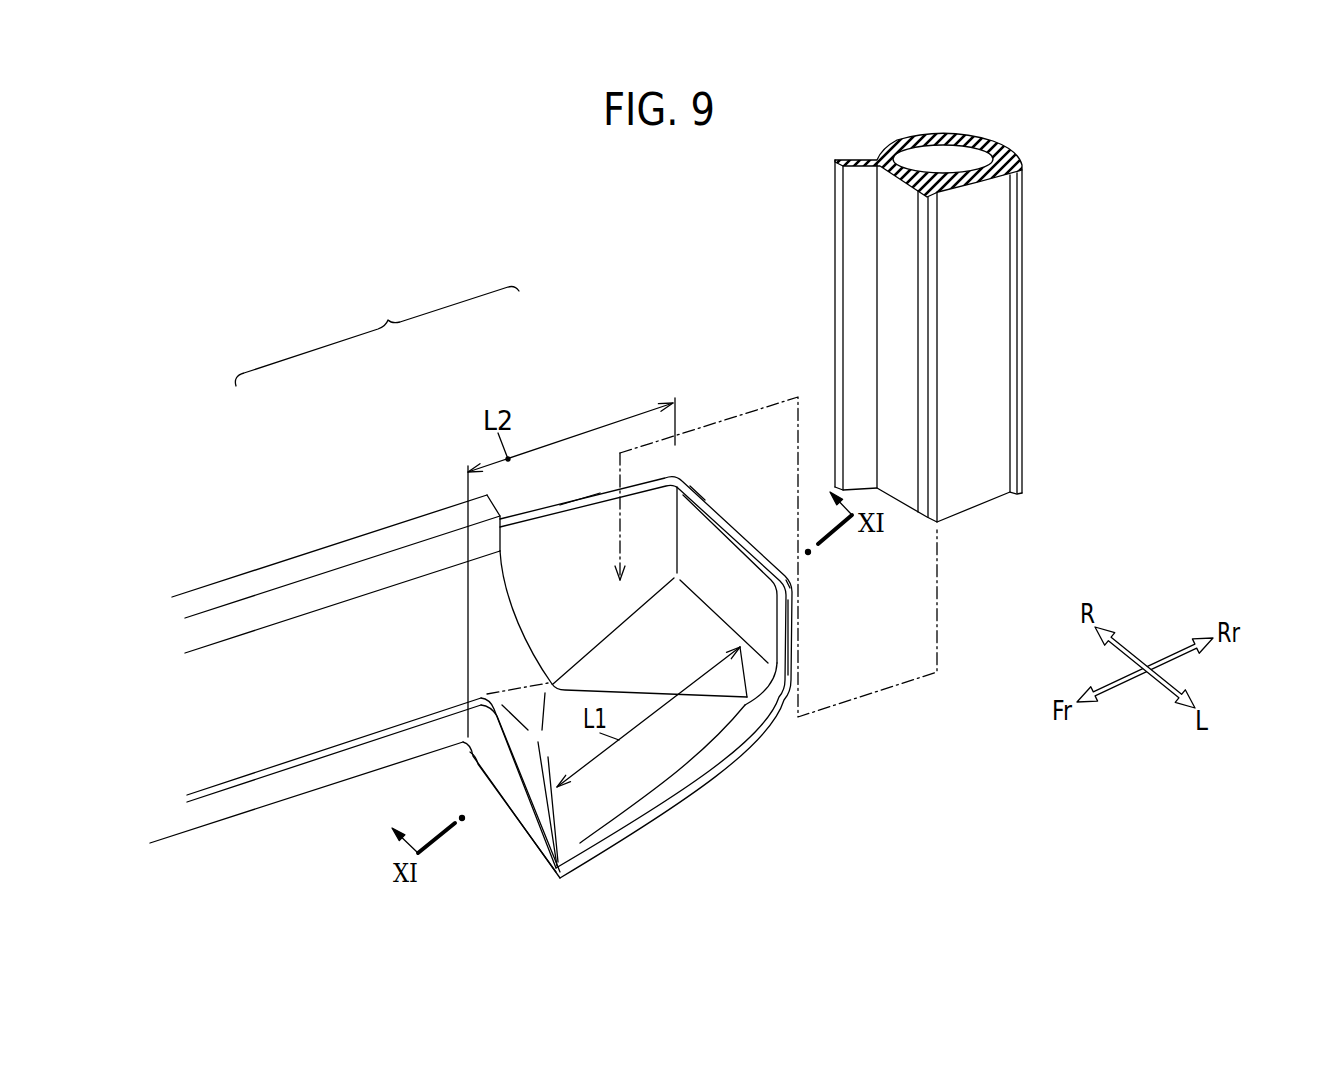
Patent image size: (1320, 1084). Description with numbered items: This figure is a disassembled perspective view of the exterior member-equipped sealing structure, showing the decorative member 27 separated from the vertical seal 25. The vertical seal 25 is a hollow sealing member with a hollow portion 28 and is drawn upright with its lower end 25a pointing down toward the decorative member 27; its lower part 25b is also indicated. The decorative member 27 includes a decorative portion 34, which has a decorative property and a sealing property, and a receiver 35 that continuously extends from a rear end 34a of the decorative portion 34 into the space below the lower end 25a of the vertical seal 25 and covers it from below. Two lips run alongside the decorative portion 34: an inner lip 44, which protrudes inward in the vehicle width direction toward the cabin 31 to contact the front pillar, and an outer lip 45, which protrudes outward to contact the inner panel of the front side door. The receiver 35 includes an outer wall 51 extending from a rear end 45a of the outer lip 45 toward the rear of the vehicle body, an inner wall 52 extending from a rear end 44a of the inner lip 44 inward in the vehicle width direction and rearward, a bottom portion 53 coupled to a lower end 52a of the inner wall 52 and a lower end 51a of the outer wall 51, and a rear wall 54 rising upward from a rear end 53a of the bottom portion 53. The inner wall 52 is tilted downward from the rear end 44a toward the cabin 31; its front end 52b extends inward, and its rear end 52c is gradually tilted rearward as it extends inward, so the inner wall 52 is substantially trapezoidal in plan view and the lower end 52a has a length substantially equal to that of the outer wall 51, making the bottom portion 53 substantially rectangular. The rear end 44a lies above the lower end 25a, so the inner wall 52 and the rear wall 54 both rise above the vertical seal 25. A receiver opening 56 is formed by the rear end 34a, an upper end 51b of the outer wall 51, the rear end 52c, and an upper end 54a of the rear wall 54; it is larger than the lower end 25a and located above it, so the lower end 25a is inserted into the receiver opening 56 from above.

The vertical seal 25 is at (995, 207).
The lower end of the vertical seal 25a is at (997, 458).
The lower end of pillar member 25b is at (970, 507).
The decorative member 27 is at (377, 337).
The hollow portion 28 is at (940, 157).
The cabin 31 is at (942, 776).
The decorative portion 34 is at (317, 545).
The rear end of the decorative portion 34a is at (493, 587).
The receiver 35 is at (562, 503).
The inner lip 44 is at (332, 712).
The rear end of the inner lip 44a is at (512, 657).
The outer lip 45 is at (283, 788).
The rear end of the outer lip 45a is at (447, 740).
The outer wall 51 is at (601, 530).
The lower end of the outer wall 51a is at (593, 640).
The upper end of the outer wall 51b is at (640, 483).
The inner wall 52 is at (637, 783).
The lower end of the inner wall 52a is at (703, 770).
The front end of the inner wall 52b is at (511, 793).
The rear end of the inner wall 52c is at (653, 688).
The bottom portion 53 is at (700, 597).
The rear end of the bottom portion 53a is at (768, 663).
The rear wall 54 is at (720, 547).
The upper end of the rear wall 54a is at (702, 500).
The receiver opening 56 is at (788, 575).